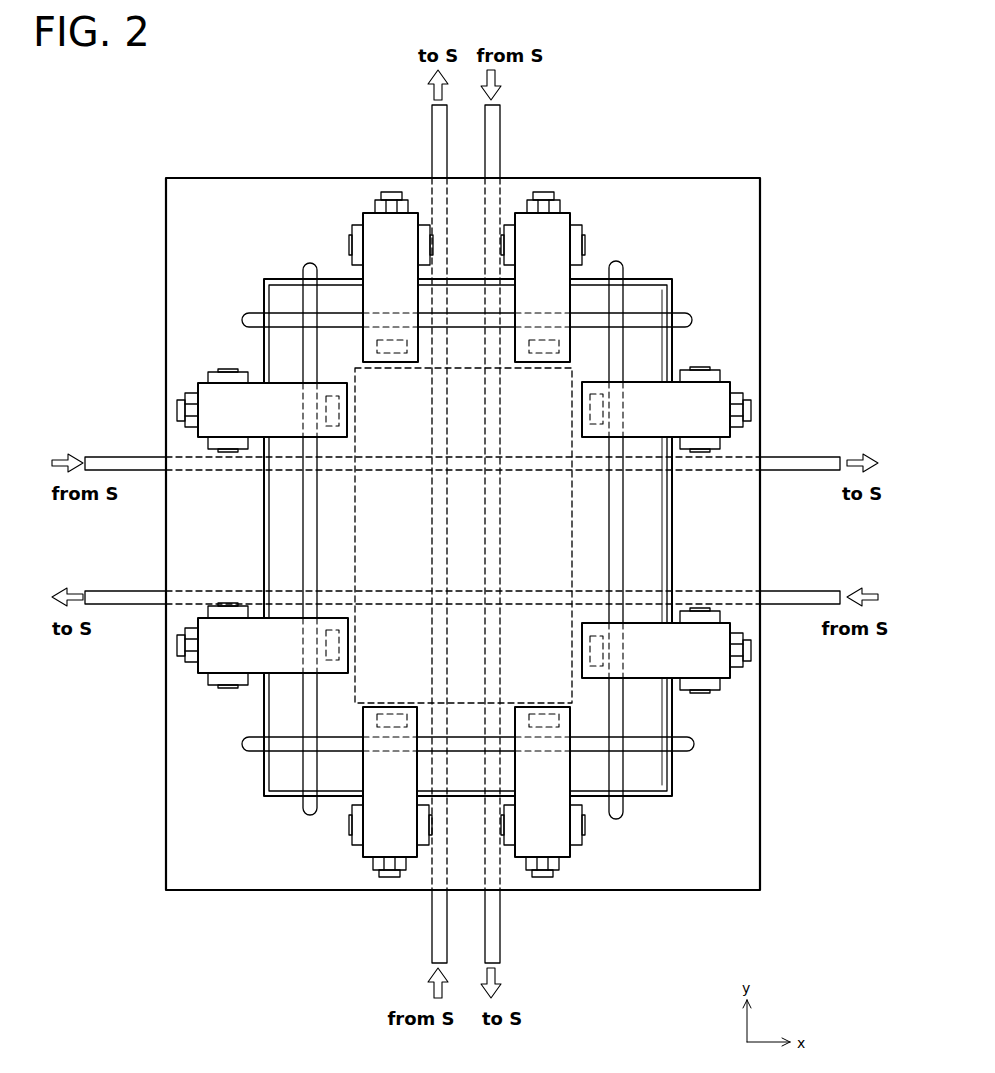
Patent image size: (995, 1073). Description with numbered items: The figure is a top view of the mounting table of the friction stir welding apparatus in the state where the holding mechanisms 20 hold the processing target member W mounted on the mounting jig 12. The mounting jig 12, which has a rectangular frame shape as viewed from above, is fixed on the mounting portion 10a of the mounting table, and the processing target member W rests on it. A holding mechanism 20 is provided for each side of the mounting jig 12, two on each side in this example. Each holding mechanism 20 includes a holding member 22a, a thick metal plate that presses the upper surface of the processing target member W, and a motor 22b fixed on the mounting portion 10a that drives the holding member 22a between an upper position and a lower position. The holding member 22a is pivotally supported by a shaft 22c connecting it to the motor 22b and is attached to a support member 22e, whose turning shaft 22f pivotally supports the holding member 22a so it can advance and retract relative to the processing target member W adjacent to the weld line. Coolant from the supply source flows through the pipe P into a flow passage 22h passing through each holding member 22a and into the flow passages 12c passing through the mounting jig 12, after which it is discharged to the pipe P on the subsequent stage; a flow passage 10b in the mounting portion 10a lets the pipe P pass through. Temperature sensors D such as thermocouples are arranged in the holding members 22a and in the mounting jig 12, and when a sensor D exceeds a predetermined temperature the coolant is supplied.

The mounting portion 10a is at (737, 224).
The flow passage 10b is at (310, 270).
The mounting jig 12 is at (675, 295).
The flow passages 12c is at (462, 322).
The holding mechanism 20 is at (394, 374).
The holding member 22a is at (705, 397).
The motor 22b is at (184, 655).
The shaft 22c is at (178, 645).
The support member 22e is at (248, 606).
The turning shaft 22f is at (232, 620).
The flow passage 22h is at (380, 318).
The temperature sensor D is at (302, 374).
The processing target member W is at (661, 286).
The pipe P is at (437, 930).